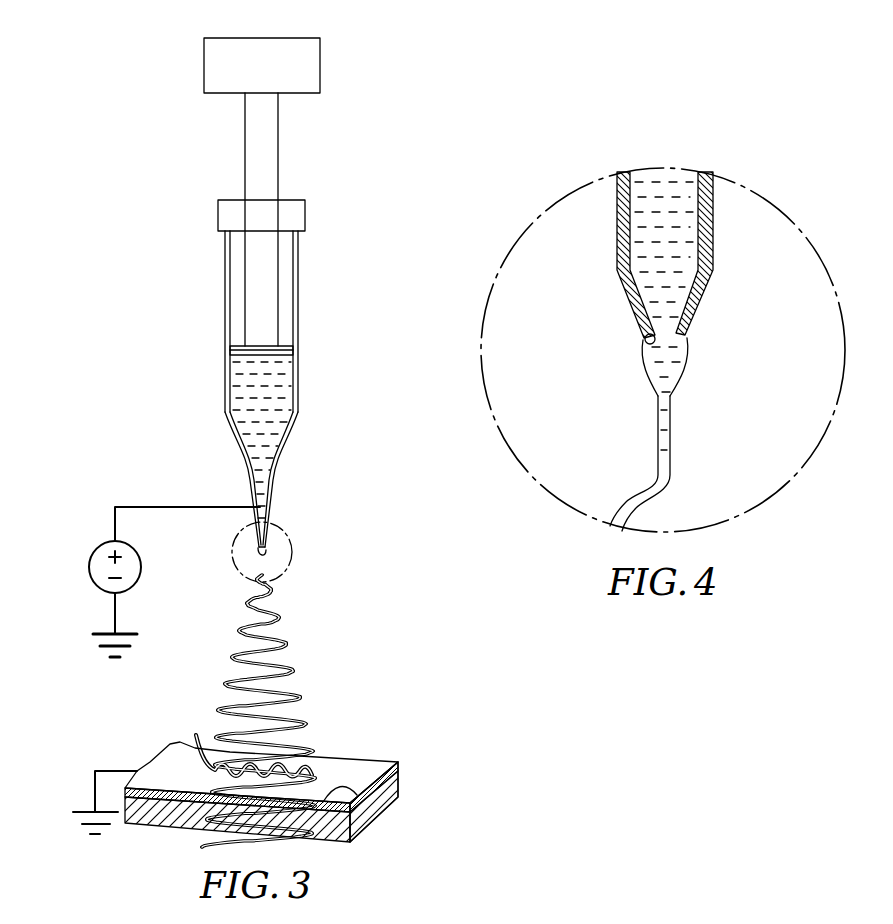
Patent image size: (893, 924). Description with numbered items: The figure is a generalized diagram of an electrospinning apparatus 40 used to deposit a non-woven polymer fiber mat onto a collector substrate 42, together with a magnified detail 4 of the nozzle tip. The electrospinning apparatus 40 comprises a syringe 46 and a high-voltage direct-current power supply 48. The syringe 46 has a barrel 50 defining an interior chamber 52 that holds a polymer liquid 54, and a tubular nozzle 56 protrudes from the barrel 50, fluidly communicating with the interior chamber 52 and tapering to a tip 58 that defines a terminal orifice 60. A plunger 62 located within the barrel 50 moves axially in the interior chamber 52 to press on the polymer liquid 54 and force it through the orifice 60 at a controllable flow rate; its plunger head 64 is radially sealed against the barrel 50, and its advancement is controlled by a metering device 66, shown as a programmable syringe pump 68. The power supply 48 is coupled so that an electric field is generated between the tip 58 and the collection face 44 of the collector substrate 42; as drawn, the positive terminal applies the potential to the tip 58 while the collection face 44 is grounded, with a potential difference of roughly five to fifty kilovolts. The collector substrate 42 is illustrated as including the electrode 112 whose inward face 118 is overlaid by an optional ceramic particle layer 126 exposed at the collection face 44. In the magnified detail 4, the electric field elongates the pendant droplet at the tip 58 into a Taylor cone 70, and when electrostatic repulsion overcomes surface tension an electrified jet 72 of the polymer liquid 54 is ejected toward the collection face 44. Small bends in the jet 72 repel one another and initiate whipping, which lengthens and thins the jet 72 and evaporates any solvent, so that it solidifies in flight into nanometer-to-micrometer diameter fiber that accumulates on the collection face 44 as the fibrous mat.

In FIG. 3, the magnified Taylor cone region 4 is at (287, 523).
In FIG. 3, the electrospinning apparatus 40 is at (135, 310).
In FIG. 3, the collector substrate 42 is at (412, 779).
In FIG. 3, the collection face 44 is at (340, 773).
In FIG. 3, the syringe 46 is at (165, 168).
In FIG. 3, the high-voltage DC power supply 48 is at (92, 539).
In FIG. 3, the barrel 50 is at (228, 248).
In FIG. 3, the interior chamber 52 is at (233, 298).
In FIG. 3, the polymer liquid 54 is at (278, 398).
In FIG. 3, the tubular nozzle 56 is at (248, 466).
In FIG. 3, the tip 58 is at (252, 546).
In FIG. 4, the tip 58 is at (630, 310).
In FIG. 3, the terminal orifice 60 is at (266, 556).
In FIG. 4, the terminal orifice 60 is at (648, 340).
In FIG. 3, the plunger 62 is at (278, 300).
In FIG. 3, the plunger head 64 is at (235, 352).
In FIG. 3, the metering device 66 is at (183, 85).
In FIG. 3, the programmable syringe pump 68 is at (212, 58).
In FIG. 4, the Taylor cone 70 is at (668, 357).
In FIG. 3, the electrified jet 72 is at (282, 618).
In FIG. 4, the electrified jet 72 is at (670, 418).
In FIG. 3, the electrode 112 is at (365, 828).
In FIG. 3, the inward face 118 is at (358, 800).
In FIG. 3, the ceramic particle layer 126 is at (400, 770).